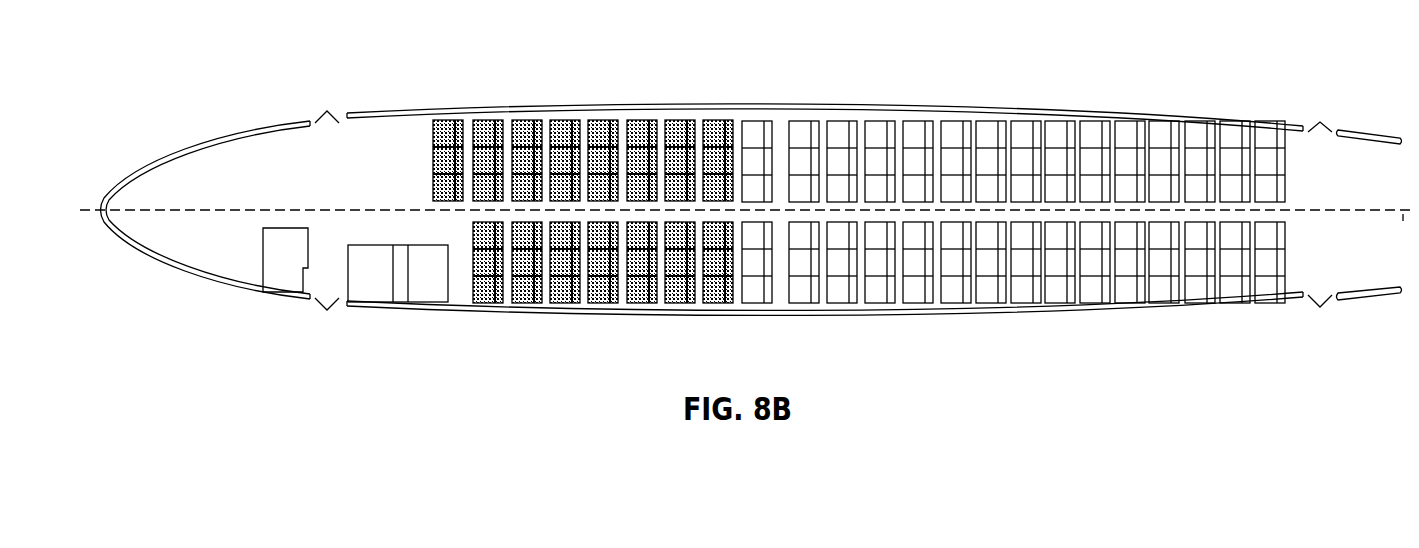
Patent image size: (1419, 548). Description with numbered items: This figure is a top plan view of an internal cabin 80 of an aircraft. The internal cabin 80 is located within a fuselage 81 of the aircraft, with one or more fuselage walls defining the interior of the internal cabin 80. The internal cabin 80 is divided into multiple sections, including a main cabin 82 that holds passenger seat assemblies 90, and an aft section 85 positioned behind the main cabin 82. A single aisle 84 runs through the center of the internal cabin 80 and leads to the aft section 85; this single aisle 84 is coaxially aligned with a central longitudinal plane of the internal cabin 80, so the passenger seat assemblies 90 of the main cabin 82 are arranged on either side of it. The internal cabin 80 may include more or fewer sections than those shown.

The internal cabin 80 is at (747, 164).
The fuselage 81 is at (549, 110).
The main cabin 82 is at (488, 125).
The single aisle 84 is at (878, 205).
The passenger seat assemblies 90 is at (757, 140).
The aft section 85 is at (1306, 145).